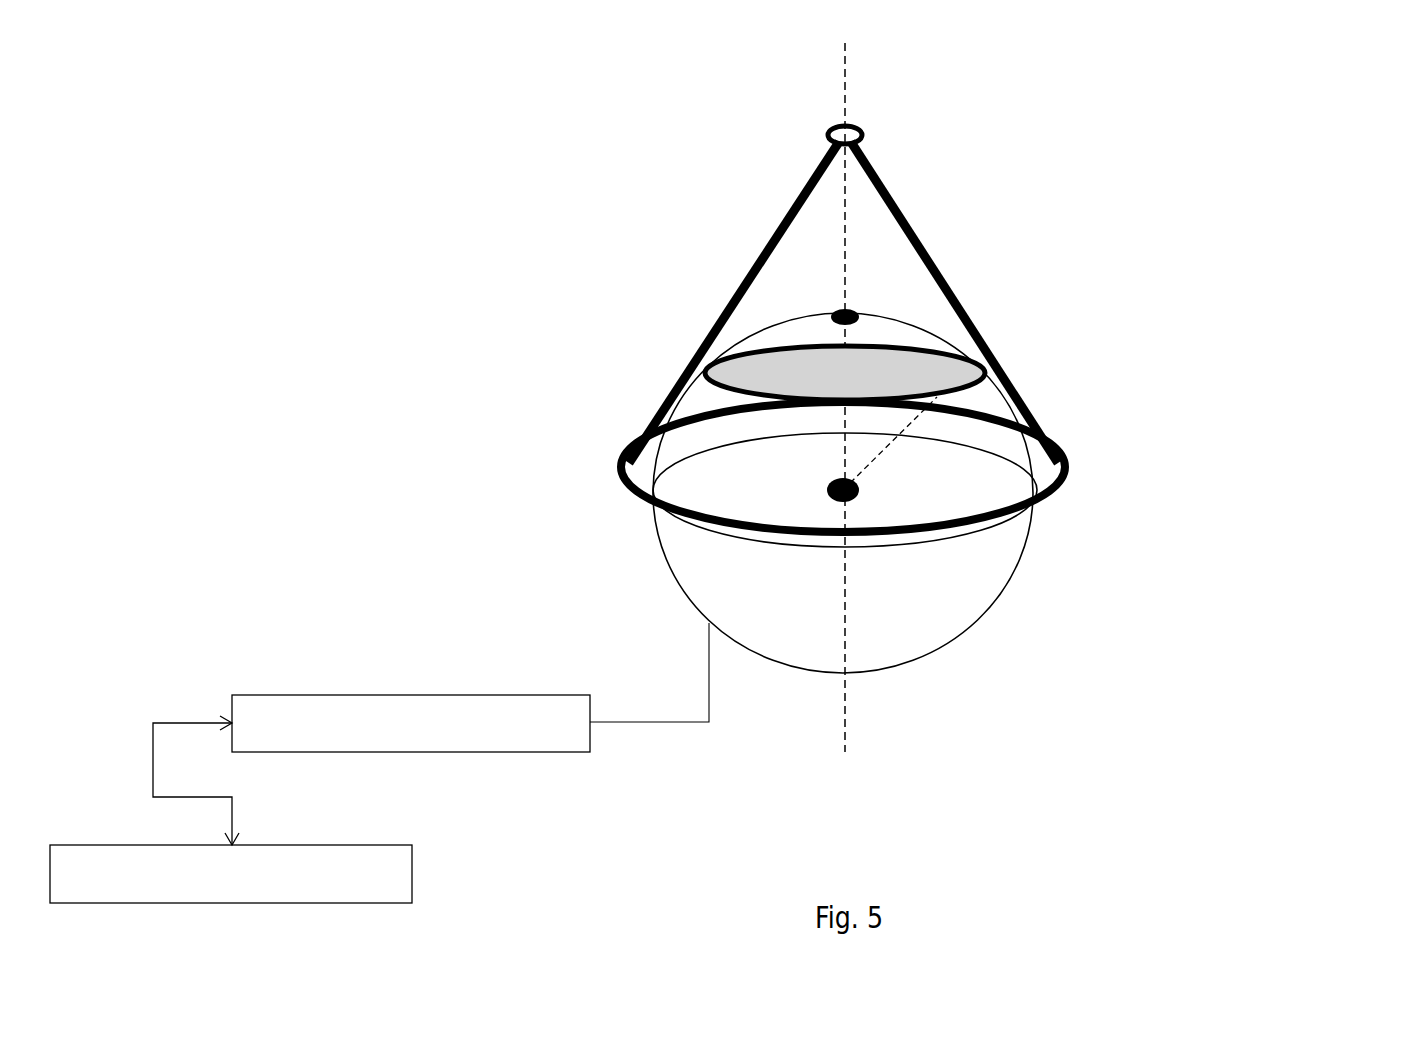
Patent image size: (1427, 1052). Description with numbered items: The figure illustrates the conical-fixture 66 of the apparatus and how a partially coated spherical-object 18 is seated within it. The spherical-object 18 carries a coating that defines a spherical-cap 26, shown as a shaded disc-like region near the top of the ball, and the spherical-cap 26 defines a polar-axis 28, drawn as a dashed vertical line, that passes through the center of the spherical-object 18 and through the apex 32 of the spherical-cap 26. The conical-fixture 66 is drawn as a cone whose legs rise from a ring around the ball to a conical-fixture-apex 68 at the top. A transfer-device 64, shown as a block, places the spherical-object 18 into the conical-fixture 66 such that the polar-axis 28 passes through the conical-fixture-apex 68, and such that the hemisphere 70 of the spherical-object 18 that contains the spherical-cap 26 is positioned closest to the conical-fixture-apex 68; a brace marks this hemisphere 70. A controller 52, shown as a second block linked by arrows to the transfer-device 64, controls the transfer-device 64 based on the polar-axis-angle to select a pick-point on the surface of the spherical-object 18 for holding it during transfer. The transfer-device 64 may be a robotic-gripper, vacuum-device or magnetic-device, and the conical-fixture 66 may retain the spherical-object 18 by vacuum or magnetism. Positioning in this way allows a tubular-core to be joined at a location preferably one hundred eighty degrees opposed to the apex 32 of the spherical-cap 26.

The spherical-object 18 is at (910, 627).
The spherical-cap 26 is at (785, 338).
The polar-axis 28 is at (847, 88).
The apex 32 is at (832, 316).
The controller 52 is at (231, 809).
The transfer-device 64 is at (470, 687).
The conical-fixture 66 is at (975, 308).
The conical-fixture-apex 68 is at (865, 133).
The hemisphere 70 is at (703, 402).